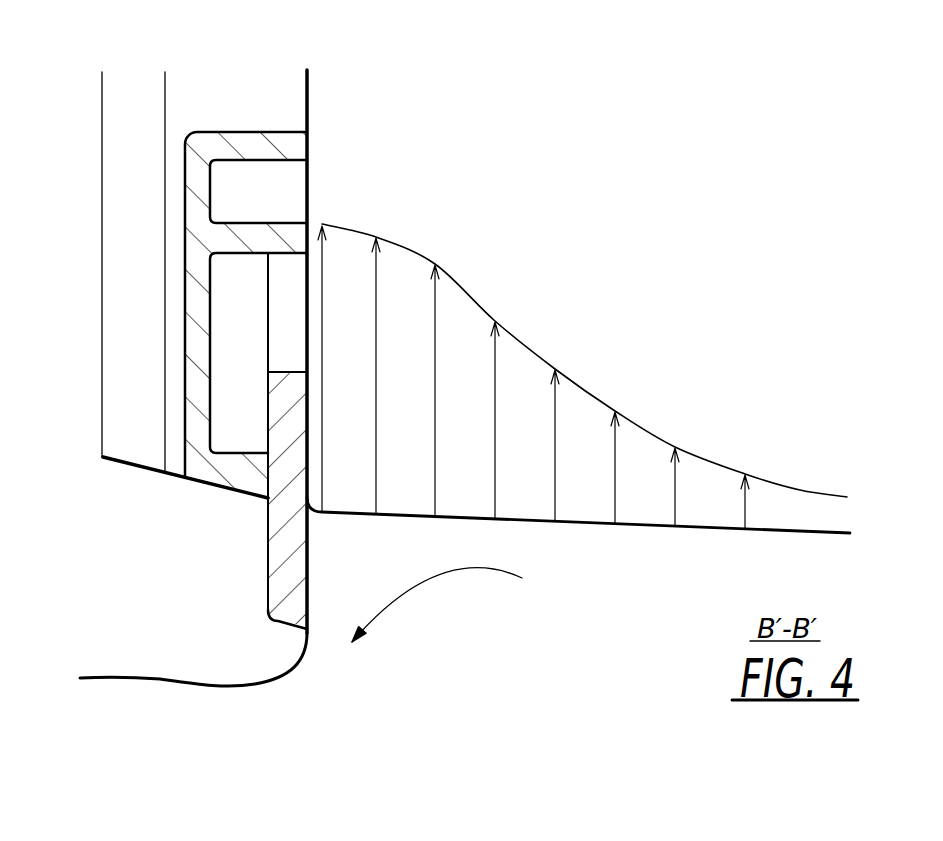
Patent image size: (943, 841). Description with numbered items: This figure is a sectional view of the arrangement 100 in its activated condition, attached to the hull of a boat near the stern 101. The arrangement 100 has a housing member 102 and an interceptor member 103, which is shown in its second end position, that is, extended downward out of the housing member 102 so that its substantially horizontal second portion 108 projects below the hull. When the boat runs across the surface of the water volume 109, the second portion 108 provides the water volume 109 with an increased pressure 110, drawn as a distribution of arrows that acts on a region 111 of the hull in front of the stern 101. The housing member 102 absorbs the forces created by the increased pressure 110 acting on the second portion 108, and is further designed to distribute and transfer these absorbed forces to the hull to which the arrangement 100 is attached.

The arrangement 100 is at (218, 110).
The stern 101 is at (307, 102).
The housing member 102 is at (192, 193).
The interceptor member 103 is at (268, 523).
The second portion 108 is at (293, 617).
The water volume 109 is at (483, 574).
The increased pressure 110 is at (322, 224).
The region of the hull 111 is at (770, 532).